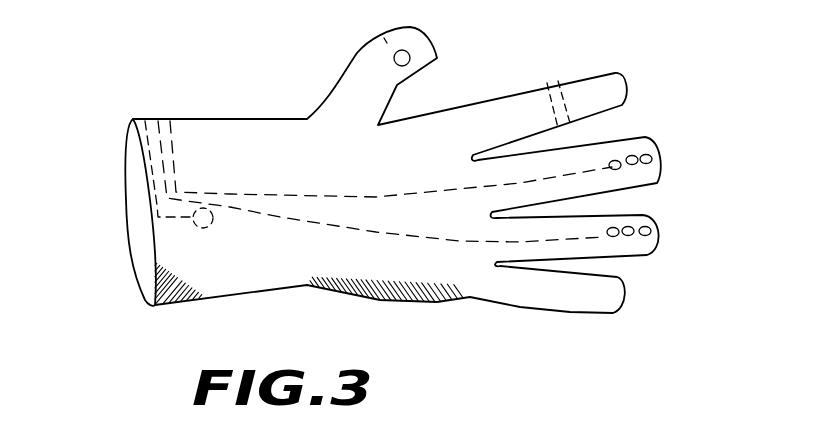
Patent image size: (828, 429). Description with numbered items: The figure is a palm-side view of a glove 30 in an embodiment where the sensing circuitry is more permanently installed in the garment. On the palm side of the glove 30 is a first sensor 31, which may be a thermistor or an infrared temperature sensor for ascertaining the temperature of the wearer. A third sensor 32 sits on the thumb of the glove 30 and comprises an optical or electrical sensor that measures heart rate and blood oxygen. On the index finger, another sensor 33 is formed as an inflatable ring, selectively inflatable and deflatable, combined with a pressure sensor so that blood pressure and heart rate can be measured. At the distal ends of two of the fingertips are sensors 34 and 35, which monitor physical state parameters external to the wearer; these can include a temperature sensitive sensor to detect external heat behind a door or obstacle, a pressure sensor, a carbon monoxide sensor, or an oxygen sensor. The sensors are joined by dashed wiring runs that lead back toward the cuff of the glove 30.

The glove 30 is at (243, 295).
The first sensor 31 is at (190, 232).
The third sensor 32 is at (409, 53).
The inflatable ring sensor 33 is at (550, 82).
The fingertip sensor 34 is at (633, 155).
The fingertip sensor 35 is at (630, 226).